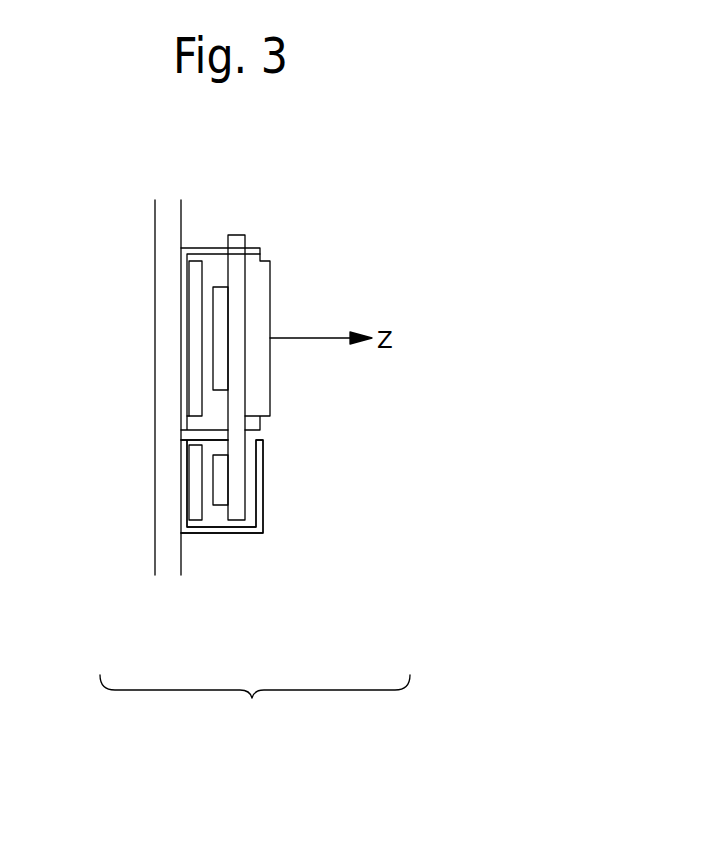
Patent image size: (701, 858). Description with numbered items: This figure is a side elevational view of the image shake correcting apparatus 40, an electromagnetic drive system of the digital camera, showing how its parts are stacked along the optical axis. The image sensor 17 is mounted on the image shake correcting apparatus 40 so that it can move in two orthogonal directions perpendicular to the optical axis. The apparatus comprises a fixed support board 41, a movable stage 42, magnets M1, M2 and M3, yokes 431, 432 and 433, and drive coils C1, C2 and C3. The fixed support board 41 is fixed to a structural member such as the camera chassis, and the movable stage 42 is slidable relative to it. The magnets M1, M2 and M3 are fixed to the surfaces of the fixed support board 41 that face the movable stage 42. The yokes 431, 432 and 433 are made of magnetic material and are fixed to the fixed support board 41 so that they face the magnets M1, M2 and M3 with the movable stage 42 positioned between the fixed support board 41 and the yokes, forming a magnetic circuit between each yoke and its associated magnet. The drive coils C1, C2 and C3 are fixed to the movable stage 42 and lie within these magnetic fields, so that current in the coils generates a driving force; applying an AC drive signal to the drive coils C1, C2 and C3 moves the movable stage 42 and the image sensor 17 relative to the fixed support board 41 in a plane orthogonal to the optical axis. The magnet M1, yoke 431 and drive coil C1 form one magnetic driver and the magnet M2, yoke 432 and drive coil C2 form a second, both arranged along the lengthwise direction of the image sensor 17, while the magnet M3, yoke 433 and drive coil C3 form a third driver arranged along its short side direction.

The image sensor 17 is at (257, 282).
The image shake correcting apparatus 40 is at (255, 707).
The fixed support board 41 is at (162, 560).
The movable stage 42 is at (240, 507).
The yoke 431 is at (265, 559).
The yoke 432 is at (260, 535).
The yoke 433 is at (255, 247).
The magnet M1 is at (173, 561).
The magnet M2 is at (193, 510).
The magnet M3 is at (190, 258).
The drive coil C1 is at (240, 566).
The drive coil C2 is at (219, 500).
The drive coil C3 is at (218, 287).